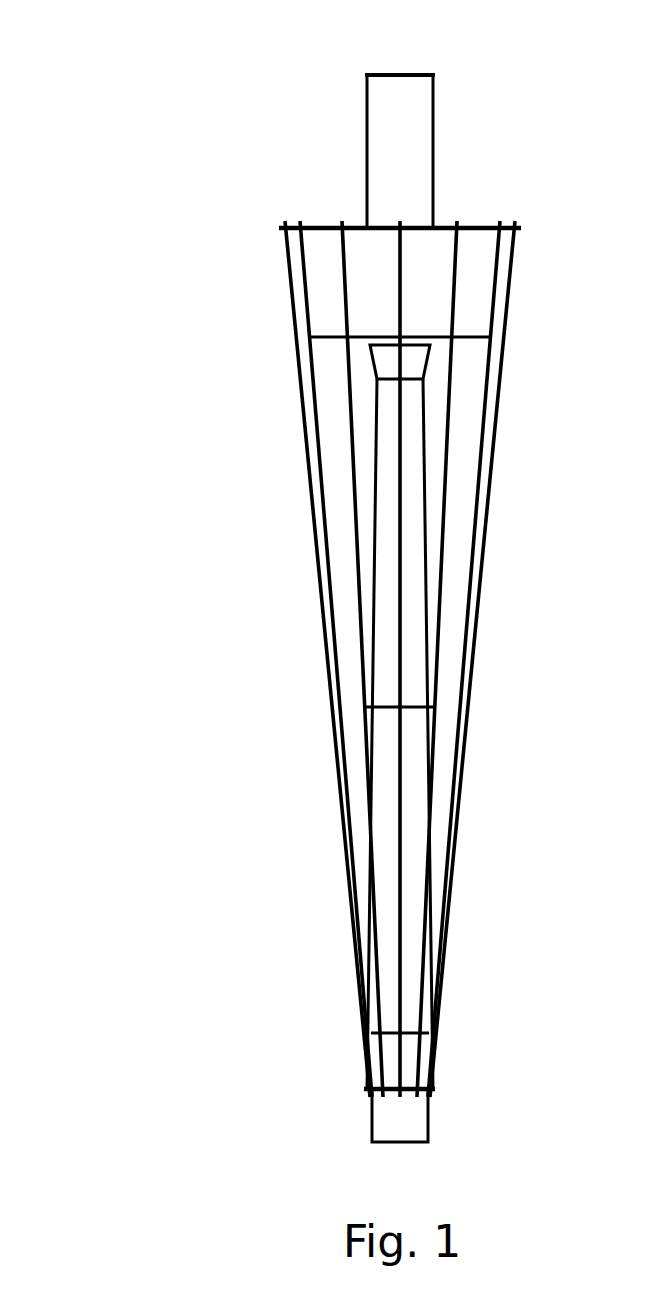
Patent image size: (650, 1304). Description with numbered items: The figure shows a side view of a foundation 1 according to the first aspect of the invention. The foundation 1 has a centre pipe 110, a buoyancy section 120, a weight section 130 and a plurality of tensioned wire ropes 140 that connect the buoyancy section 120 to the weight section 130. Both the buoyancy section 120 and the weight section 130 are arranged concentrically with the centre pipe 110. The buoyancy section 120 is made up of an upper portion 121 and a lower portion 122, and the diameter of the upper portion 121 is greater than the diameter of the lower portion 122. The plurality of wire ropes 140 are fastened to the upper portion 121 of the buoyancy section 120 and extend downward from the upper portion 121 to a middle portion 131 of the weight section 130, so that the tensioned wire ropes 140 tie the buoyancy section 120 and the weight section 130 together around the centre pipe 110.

The foundation 1 is at (135, 155).
The centre pipe 110 is at (433, 148).
The buoyancy section 120 is at (300, 285).
The upper portion 121 is at (292, 228).
The lower portion 122 is at (490, 338).
The weight section 130 is at (370, 1118).
The middle portion 131 is at (435, 1092).
The tensioned wire ropes 140 is at (326, 660).